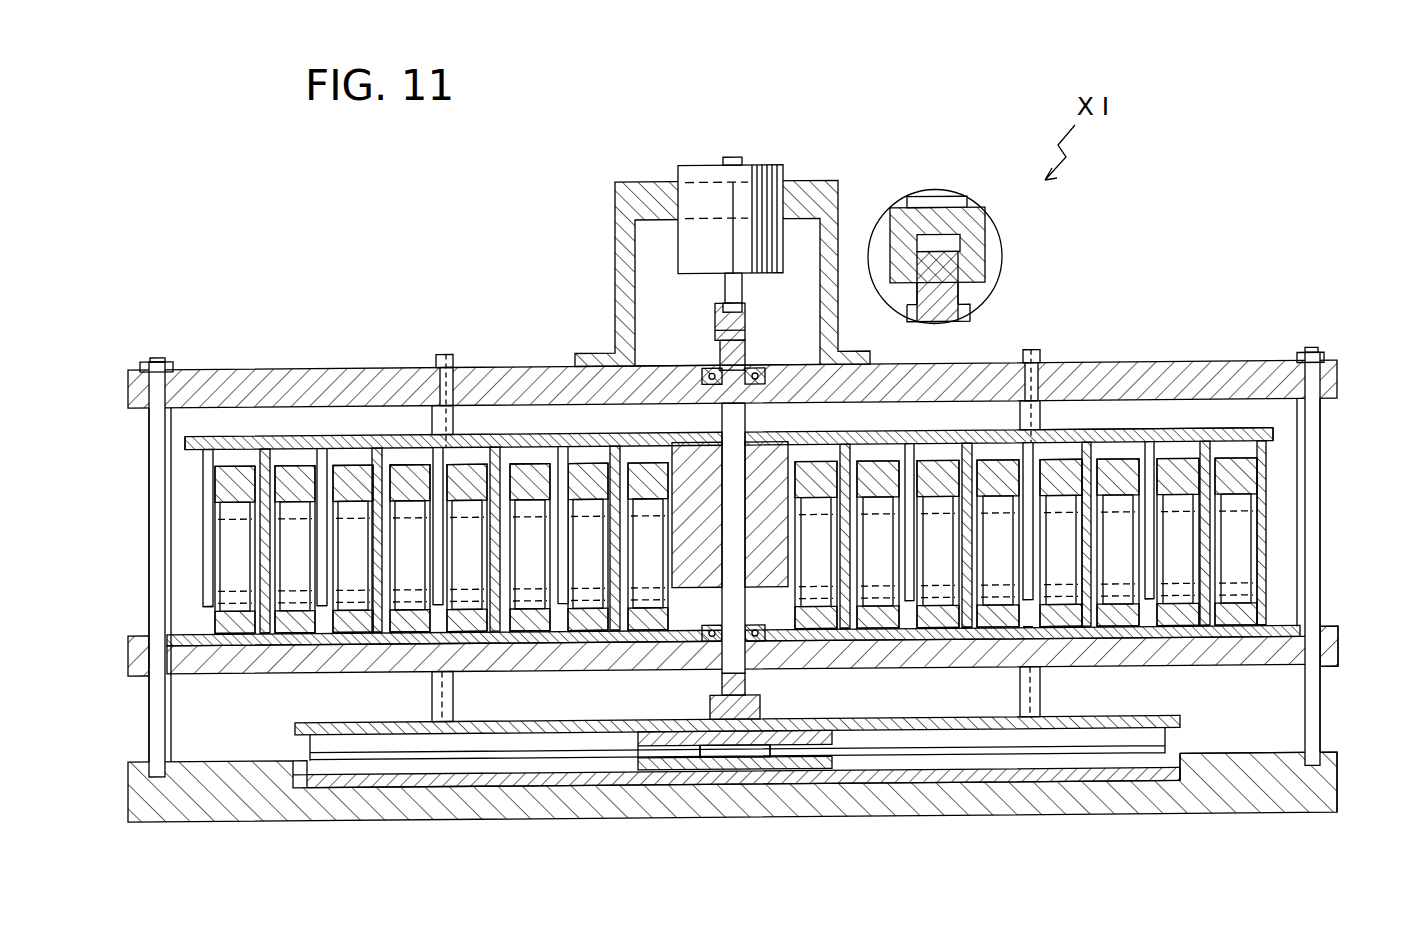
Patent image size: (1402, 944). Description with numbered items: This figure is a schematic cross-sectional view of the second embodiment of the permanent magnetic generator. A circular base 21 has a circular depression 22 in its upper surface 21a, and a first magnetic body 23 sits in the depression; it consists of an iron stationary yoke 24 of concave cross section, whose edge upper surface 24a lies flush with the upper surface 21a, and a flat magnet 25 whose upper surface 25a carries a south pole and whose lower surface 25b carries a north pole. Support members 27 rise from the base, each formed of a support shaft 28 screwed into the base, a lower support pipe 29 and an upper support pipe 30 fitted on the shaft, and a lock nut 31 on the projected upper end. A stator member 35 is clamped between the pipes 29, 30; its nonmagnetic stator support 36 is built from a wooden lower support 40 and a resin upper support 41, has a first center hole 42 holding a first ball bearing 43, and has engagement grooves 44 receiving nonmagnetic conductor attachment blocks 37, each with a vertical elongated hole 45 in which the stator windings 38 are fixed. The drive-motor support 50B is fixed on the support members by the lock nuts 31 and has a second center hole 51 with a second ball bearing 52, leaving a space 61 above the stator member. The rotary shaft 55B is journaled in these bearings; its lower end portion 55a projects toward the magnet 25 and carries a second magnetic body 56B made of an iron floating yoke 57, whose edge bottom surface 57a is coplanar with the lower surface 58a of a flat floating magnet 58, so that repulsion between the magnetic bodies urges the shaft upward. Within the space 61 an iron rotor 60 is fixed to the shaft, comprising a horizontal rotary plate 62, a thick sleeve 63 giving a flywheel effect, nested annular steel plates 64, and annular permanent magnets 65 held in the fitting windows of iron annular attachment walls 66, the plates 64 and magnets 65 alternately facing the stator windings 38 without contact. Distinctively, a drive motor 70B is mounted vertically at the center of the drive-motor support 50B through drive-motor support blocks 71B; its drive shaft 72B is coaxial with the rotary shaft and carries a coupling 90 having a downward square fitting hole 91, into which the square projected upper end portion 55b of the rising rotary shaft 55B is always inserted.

The circular base 21 is at (1045, 800).
The upper surface of the base 21a is at (1260, 755).
The circular depression 22 is at (1182, 772).
The first magnetic body 23 is at (800, 672).
The stationary yoke 24 is at (940, 790).
The upper surface of the stationary yoke edge portion 24a is at (1175, 727).
The flat magnet 25 is at (720, 772).
The upper surface of the magnet 25a is at (783, 772).
The lower surface of the magnet 25b is at (685, 770).
The support members 27 is at (155, 360).
The support shaft 28 is at (149, 518).
The lower support pipe 29 is at (172, 730).
The upper support pipe 30 is at (150, 470).
The lock nut 31 is at (165, 360).
The stator member 35 is at (1322, 630).
The stator support 36 is at (598, 655).
The conductor attachment blocks 37 is at (264, 645).
The stator windings 38 is at (228, 553).
The lower support 40 is at (325, 645).
The upper support 41 is at (1340, 640).
The first center hole 42 is at (750, 672).
The first ball bearing 43 is at (733, 620).
The engagement grooves 44 is at (540, 644).
The vertical elongated hole 45 is at (210, 468).
The drive-motor support 50B is at (1105, 435).
The second center hole 51 is at (729, 426).
The second ball bearing 52 is at (712, 368).
The lower end portion of the rotary shaft 55a is at (640, 750).
The coupling part 55b is at (714, 334).
The rotary shaft 55B is at (752, 370).
The second magnetic body 56B is at (745, 722).
The floating yoke 57 is at (380, 745).
The bottom surface of the floating yoke edge portion 57a is at (292, 766).
The floating magnet 58 is at (845, 774).
The lower surface of the floating magnet 58a is at (630, 768).
The rotor 60 is at (1185, 420).
The space 61 is at (352, 400).
The rotary plate 62 is at (575, 435).
The sleeve 63 is at (790, 568).
The annular steel plates 64 is at (266, 468).
The annular permanent magnets 65 is at (315, 530).
The annular attachment walls 66 is at (888, 470).
The drive motor 70B is at (730, 185).
The drive-motor support blocks 71B is at (828, 200).
The drive shaft 72B is at (746, 310).
The coupling 90 is at (722, 304).
The fitting hole 91 is at (945, 243).